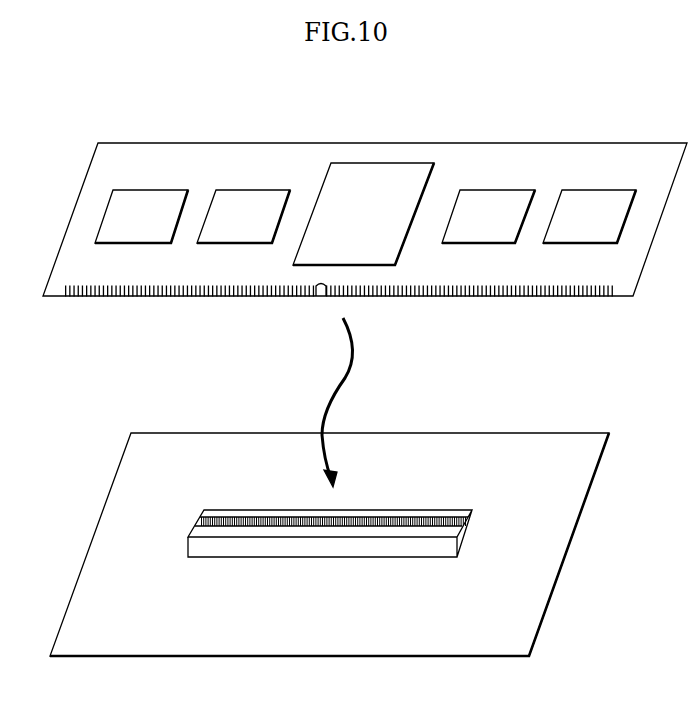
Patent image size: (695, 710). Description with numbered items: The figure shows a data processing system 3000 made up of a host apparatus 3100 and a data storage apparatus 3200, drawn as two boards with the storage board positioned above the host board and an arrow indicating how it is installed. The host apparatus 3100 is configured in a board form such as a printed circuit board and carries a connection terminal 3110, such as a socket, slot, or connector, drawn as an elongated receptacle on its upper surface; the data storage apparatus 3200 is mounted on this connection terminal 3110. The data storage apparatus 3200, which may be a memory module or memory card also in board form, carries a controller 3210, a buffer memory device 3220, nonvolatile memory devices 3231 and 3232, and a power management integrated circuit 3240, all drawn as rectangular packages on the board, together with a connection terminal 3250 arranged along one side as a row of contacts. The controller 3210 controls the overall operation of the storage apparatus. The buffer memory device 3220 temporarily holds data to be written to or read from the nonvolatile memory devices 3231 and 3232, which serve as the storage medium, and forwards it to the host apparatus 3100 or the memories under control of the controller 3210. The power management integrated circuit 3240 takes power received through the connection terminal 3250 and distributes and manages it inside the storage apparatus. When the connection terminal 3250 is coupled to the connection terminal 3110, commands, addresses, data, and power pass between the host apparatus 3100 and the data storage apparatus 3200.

The data processing system 3000 is at (78, 104).
The host apparatus 3100 is at (329, 544).
The connection terminal 3110 is at (473, 511).
The data storage apparatus 3200 is at (365, 241).
The controller 3210 is at (363, 214).
The buffer memory device 3220 is at (243, 216).
The nonvolatile memory device 3231 is at (488, 216).
The nonvolatile memory device 3232 is at (589, 216).
The power management integrated circuit 3240 is at (141, 216).
The connection terminal 3250 is at (80, 297).